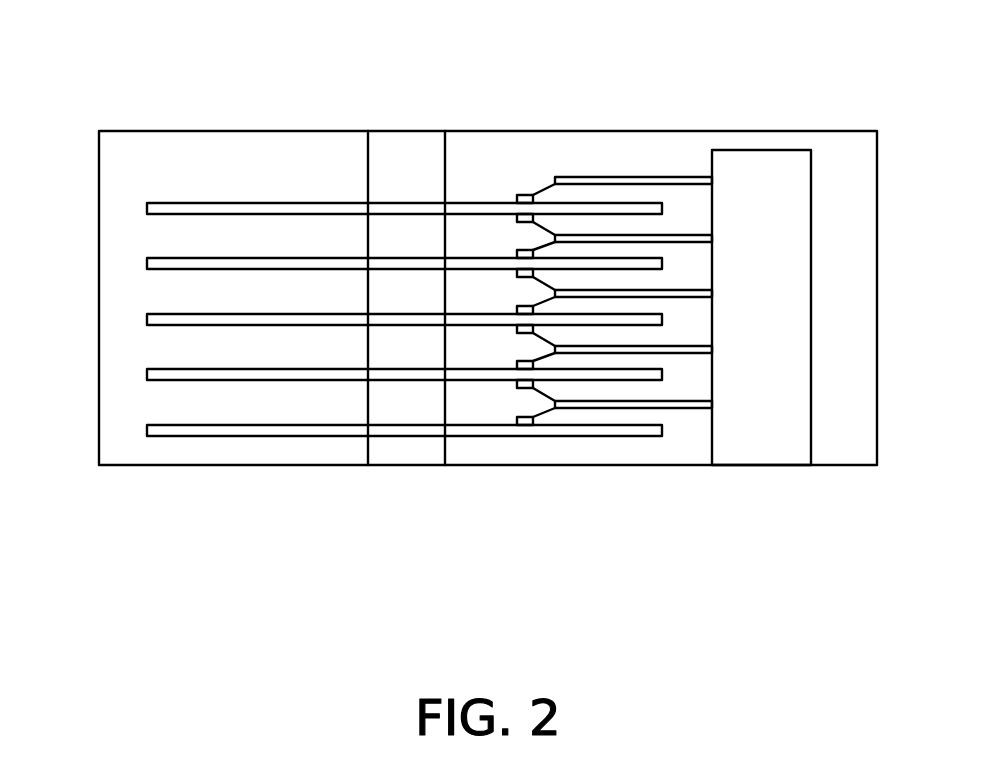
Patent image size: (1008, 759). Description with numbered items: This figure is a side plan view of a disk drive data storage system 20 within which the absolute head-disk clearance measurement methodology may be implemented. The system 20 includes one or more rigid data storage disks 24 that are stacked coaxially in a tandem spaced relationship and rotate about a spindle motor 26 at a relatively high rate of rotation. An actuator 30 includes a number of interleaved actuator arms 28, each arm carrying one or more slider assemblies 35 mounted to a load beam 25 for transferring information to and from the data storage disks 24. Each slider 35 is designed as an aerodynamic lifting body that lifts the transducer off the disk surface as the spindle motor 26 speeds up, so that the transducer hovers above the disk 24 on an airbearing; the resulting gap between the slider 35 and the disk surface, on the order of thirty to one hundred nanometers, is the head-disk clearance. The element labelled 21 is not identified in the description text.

The data storage system 20 is at (775, 98).
The substrate 21 is at (877, 343).
The rigid data storage disks 24 is at (147, 206).
The load beam 25 is at (541, 191).
The spindle motor 26 is at (398, 456).
The actuator arms 28 is at (612, 177).
The actuator 30 is at (758, 437).
The slider 35 is at (520, 194).